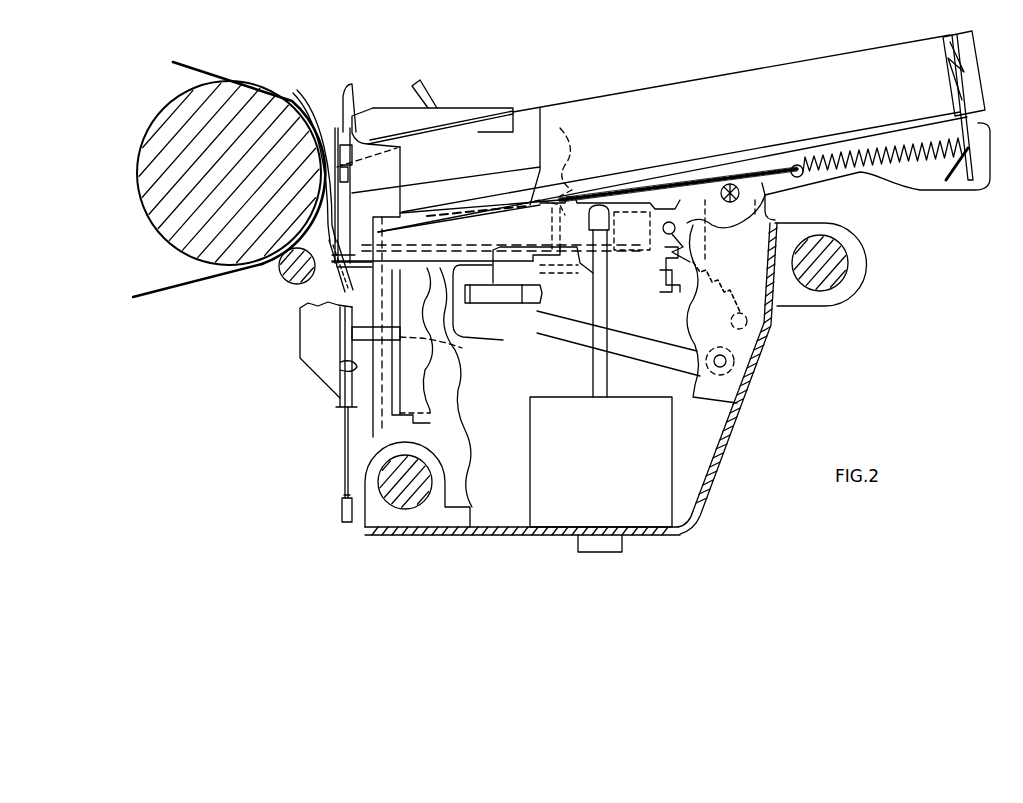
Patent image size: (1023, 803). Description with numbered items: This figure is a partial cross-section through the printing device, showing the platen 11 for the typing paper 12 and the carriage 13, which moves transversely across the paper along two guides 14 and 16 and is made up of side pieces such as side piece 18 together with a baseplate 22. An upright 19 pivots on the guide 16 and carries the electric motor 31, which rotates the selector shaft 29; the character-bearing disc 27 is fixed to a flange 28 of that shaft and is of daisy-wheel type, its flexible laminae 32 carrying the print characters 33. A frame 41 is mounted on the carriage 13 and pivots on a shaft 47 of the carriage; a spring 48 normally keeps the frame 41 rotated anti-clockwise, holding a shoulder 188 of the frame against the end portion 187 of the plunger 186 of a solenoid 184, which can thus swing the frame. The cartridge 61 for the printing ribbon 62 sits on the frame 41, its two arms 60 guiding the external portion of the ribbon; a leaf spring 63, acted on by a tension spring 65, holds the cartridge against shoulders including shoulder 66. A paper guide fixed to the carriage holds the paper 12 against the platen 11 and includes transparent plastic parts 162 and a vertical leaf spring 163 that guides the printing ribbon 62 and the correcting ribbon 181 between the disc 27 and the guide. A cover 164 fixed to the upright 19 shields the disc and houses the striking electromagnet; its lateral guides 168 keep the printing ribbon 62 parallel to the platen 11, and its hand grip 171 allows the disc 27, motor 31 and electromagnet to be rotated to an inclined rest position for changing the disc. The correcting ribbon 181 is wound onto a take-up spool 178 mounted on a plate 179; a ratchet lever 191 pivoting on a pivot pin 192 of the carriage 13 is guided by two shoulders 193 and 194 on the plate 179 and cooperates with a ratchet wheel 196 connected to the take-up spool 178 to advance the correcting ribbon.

The platen 11 is at (212, 263).
The typing paper 12 is at (200, 70).
The carriage 13 is at (792, 338).
The guide 14 is at (833, 266).
The guide 16 is at (438, 486).
The side piece 18 is at (472, 420).
The upright 19 is at (348, 440).
The baseplate 22 is at (700, 498).
The character-bearing disc 27 is at (322, 390).
The flange 28 is at (345, 365).
The selector shaft 29 is at (355, 330).
The electric motor 31 is at (410, 393).
The flexible lamina 32 is at (340, 484).
The print character 33 is at (341, 510).
The frame 41 is at (842, 193).
The shaft 47 is at (738, 152).
The spring 48 is at (703, 245).
The arm 60 is at (538, 106).
The cartridge 61 is at (770, 70).
The printing ribbon 62 is at (368, 189).
The leaf spring 63 is at (948, 110).
The tension spring 65 is at (876, 130).
The shoulder 66 is at (566, 146).
The transparent plastics part 162 is at (296, 96).
The leaf spring 163 is at (340, 118).
The cover 164 is at (460, 110).
The lateral guide 168 is at (352, 86).
The hand grip 171 is at (420, 88).
The take-up spool 178 is at (678, 168).
The plate 179 is at (509, 290).
The correcting ribbon 181 is at (420, 216).
The solenoid 184 is at (670, 460).
The plunger 186 is at (604, 379).
The end portion 187 is at (600, 230).
The shoulder 188 is at (597, 188).
The ratchet lever 191 is at (650, 355).
The pivot pin 192 is at (736, 369).
The shoulder 193 is at (500, 262).
The shoulder 194 is at (543, 292).
The ratchet wheel 196 is at (674, 290).